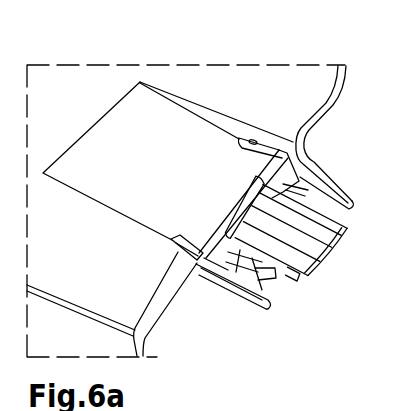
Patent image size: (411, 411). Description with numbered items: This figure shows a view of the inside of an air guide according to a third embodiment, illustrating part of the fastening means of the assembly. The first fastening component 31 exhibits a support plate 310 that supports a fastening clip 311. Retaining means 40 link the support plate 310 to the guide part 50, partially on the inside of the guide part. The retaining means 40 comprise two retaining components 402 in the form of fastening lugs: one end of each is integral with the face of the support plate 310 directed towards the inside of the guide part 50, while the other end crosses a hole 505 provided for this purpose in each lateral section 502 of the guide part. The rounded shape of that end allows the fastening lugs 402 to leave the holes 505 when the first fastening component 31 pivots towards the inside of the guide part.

The retaining means 40 is at (128, 167).
The guide part 50 is at (184, 135).
The hole 505 is at (250, 136).
The lateral section 502 is at (335, 185).
The retaining component 402 is at (242, 144).
The fastening clip 311 is at (297, 257).
The support plate 310 is at (268, 283).
The first fastening component 31 is at (363, 322).